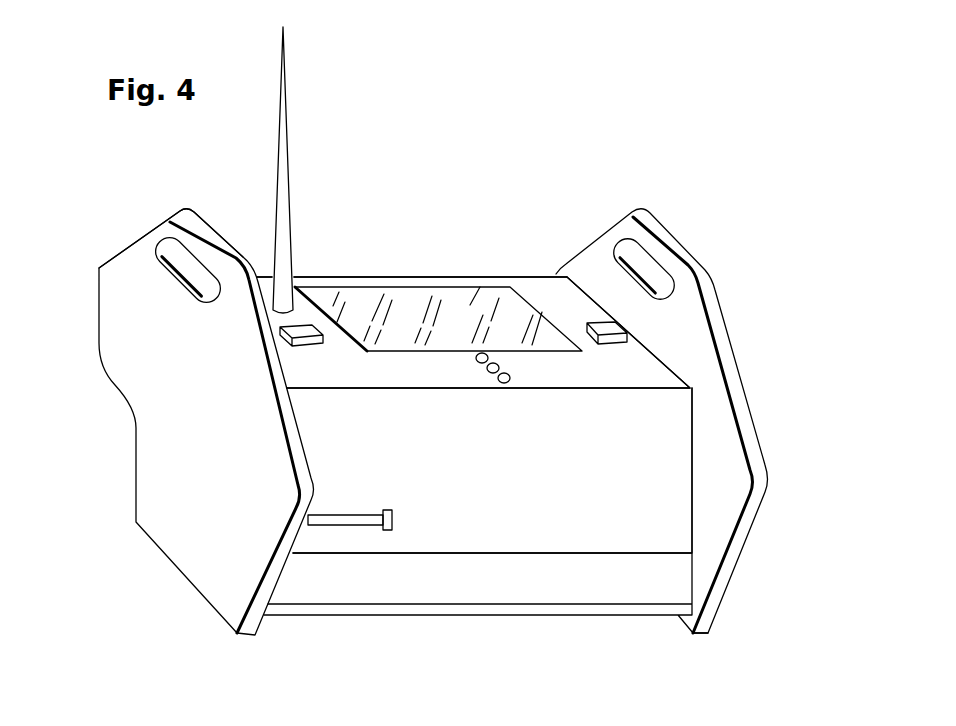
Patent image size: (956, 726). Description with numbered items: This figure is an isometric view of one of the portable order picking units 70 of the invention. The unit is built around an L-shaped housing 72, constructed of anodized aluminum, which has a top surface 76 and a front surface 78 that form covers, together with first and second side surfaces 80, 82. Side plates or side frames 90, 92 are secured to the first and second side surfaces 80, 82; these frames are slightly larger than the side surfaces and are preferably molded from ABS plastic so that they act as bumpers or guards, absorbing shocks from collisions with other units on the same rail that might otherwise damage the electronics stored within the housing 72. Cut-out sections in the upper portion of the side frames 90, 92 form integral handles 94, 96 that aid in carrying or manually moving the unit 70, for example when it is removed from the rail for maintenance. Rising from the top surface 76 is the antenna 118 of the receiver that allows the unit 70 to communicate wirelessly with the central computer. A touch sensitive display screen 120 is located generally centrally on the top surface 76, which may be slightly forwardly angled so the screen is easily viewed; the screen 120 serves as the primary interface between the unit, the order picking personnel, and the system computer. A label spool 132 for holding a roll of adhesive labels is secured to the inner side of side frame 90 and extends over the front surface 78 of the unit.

The order picking unit 70 is at (582, 190).
The L-shaped housing 72 is at (425, 273).
The top surface 76 is at (343, 363).
The front surface 78 is at (490, 540).
The first side surface 80 is at (168, 440).
The second side surface 82 is at (750, 408).
The first side frame 90 is at (122, 268).
The second side frame 92 is at (720, 325).
The integral handle 94 is at (170, 243).
The integral handle 96 is at (645, 255).
The antenna 118 is at (288, 143).
The touch sensitive display screen 120 is at (467, 310).
The label spool 132 is at (342, 512).